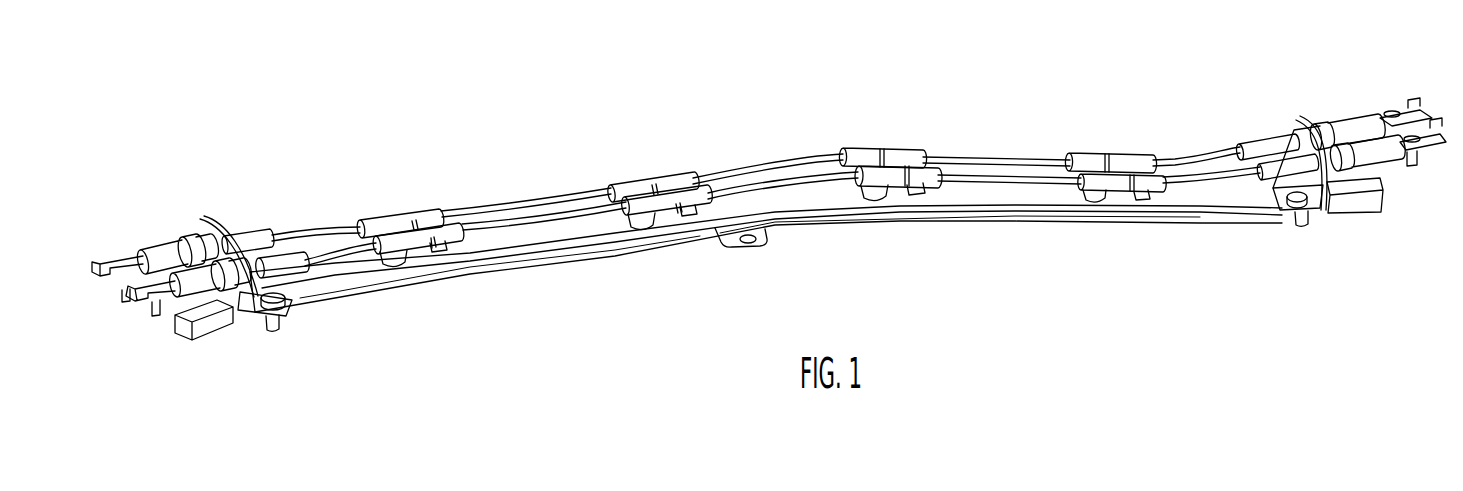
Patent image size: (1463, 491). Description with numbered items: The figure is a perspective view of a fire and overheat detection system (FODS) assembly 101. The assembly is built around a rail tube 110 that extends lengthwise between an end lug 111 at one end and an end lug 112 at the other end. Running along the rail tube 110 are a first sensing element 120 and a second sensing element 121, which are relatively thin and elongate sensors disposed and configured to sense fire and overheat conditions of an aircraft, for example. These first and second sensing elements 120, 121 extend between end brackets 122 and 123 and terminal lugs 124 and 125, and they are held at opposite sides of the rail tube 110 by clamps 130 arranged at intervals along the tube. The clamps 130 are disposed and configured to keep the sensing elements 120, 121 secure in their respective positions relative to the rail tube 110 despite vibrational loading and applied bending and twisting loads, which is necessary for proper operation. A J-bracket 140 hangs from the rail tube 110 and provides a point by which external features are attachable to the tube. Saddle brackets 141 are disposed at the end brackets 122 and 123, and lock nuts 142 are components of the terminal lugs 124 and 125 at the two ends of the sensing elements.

The FODS assembly 101 is at (776, 210).
The rail tube 110 is at (512, 246).
The end lug 111 is at (186, 350).
The end lug 112 is at (1335, 213).
The first sensing element 120 is at (316, 227).
The second sensing element 121 is at (339, 242).
The end bracket 122 is at (210, 218).
The end bracket 123 is at (1299, 116).
The terminal lug 124 is at (172, 247).
The terminal lug 125 is at (1340, 131).
The clamps 130 is at (650, 177).
The J-bracket 140 is at (755, 253).
The saddle brackets 141 is at (282, 330).
The lock nuts 142 is at (160, 268).